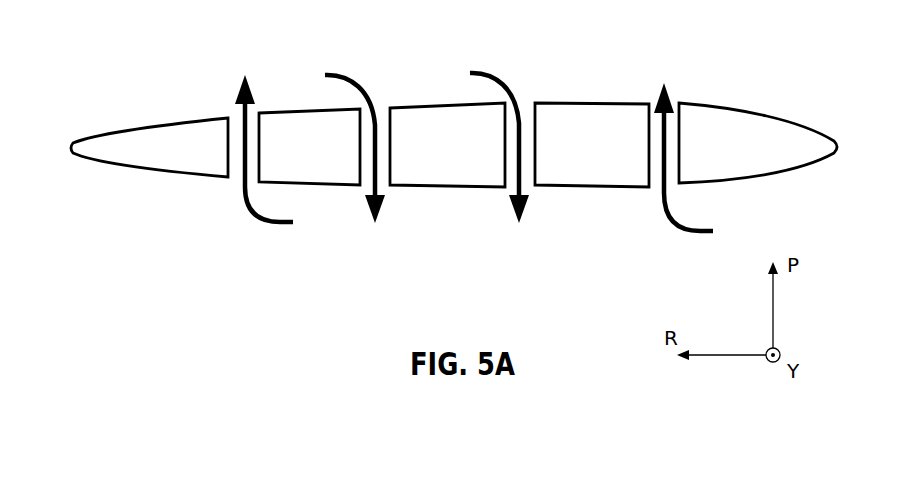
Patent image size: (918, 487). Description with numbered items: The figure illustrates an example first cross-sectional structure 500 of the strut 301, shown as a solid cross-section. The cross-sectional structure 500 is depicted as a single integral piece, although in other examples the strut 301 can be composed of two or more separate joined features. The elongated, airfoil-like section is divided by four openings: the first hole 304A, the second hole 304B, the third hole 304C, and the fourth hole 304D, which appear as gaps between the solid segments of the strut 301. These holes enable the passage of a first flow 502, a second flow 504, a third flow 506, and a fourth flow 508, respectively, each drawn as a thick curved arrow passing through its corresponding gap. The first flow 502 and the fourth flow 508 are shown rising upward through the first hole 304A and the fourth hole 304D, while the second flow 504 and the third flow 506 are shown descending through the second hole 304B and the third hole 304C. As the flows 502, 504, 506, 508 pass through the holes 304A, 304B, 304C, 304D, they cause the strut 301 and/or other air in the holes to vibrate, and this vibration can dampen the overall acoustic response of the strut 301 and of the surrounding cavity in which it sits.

The first cross-sectional structure 500 is at (130, 40).
The strut 301 is at (155, 92).
The first hole 304A is at (227, 178).
The second hole 304B is at (360, 187).
The third hole 304C is at (503, 188).
The fourth hole 304D is at (648, 188).
The first flow 502 is at (270, 228).
The second flow 504 is at (368, 90).
The third flow 506 is at (510, 85).
The fourth flow 508 is at (683, 234).